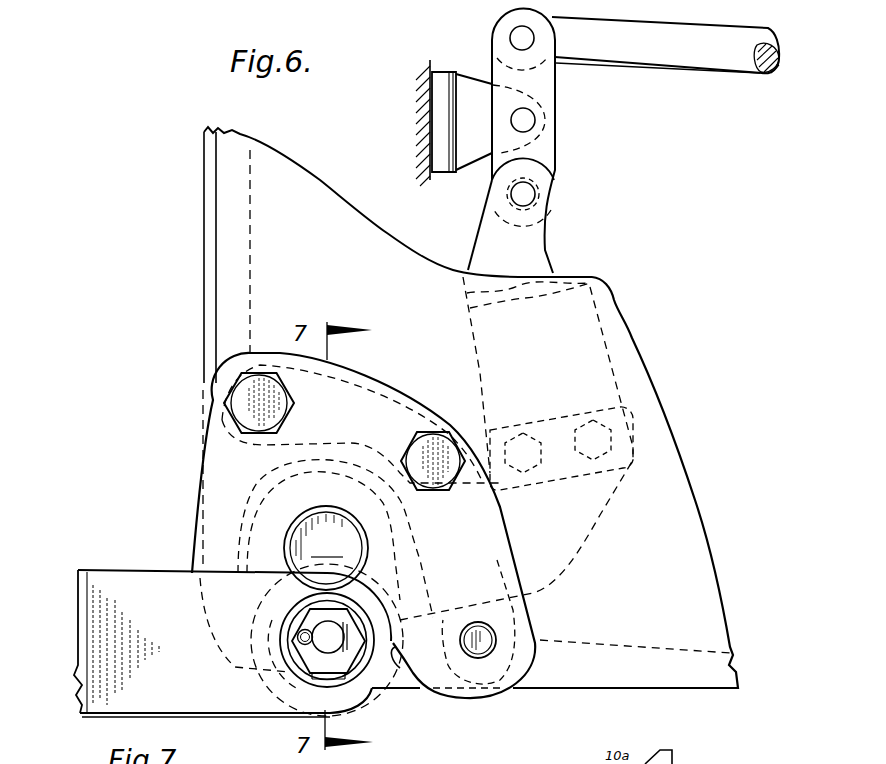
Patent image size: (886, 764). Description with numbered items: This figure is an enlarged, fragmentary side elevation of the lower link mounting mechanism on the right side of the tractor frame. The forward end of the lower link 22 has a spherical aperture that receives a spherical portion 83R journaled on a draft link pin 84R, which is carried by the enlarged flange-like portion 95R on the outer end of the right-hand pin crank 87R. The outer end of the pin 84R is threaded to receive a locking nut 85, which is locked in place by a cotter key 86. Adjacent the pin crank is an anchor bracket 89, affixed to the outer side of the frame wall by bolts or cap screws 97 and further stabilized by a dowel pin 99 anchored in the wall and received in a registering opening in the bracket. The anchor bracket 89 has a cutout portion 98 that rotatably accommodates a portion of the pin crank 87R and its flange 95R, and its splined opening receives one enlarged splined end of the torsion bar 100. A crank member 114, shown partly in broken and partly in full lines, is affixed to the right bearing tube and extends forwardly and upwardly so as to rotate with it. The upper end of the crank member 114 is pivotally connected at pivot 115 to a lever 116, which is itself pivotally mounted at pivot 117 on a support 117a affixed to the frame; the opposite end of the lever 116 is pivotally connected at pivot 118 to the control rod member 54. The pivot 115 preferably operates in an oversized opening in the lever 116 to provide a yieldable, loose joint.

The lower link 22 is at (118, 602).
The control rod member 54 is at (725, 53).
The spherical portion 83R is at (352, 700).
The draft link pin 84R is at (340, 627).
The locking nut 85 is at (300, 657).
The cotter key 86 is at (297, 636).
The right-hand pin crank 87R is at (235, 523).
The anchor bracket 89 is at (220, 438).
The flange-like portion 95R is at (327, 640).
The bolts or cap screws 97 is at (257, 382).
The cutout portion 98 is at (410, 683).
The dowel pin 99 is at (470, 621).
The torsion bar 100 is at (326, 548).
The crank member 114 is at (597, 335).
The pivot 115 is at (523, 195).
The lever 116 is at (580, 157).
The pivot 117 is at (533, 118).
The support 117a is at (472, 140).
The pivot 118 is at (510, 38).